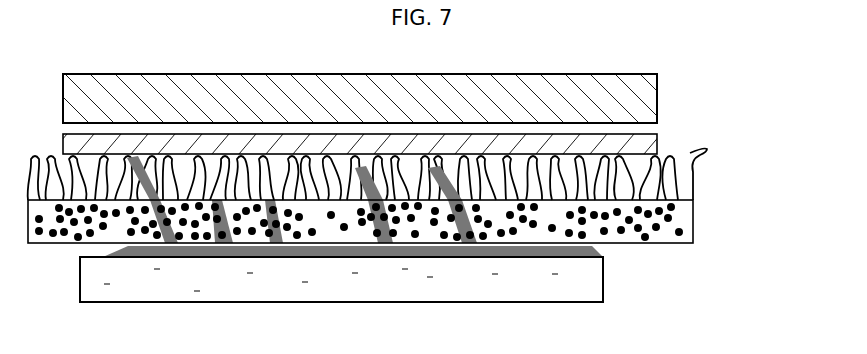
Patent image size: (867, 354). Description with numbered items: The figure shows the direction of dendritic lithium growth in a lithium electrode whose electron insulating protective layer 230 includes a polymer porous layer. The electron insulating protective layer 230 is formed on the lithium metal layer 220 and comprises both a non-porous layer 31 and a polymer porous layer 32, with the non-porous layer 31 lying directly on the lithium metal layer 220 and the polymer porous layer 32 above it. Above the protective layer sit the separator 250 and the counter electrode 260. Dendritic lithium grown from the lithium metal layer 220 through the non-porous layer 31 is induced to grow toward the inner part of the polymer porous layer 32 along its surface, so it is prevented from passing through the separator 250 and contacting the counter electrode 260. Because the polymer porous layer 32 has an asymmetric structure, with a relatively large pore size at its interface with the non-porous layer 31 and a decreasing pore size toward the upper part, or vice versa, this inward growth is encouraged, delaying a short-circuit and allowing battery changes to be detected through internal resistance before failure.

The counter electrode 260 is at (657, 92).
The separator 250 is at (657, 143).
The electron insulating protective layer 230 is at (426, 201).
The polymer porous layer 32 is at (707, 149).
The non-porous layer 31 is at (766, 147).
The lithium metal layer 220 is at (603, 277).